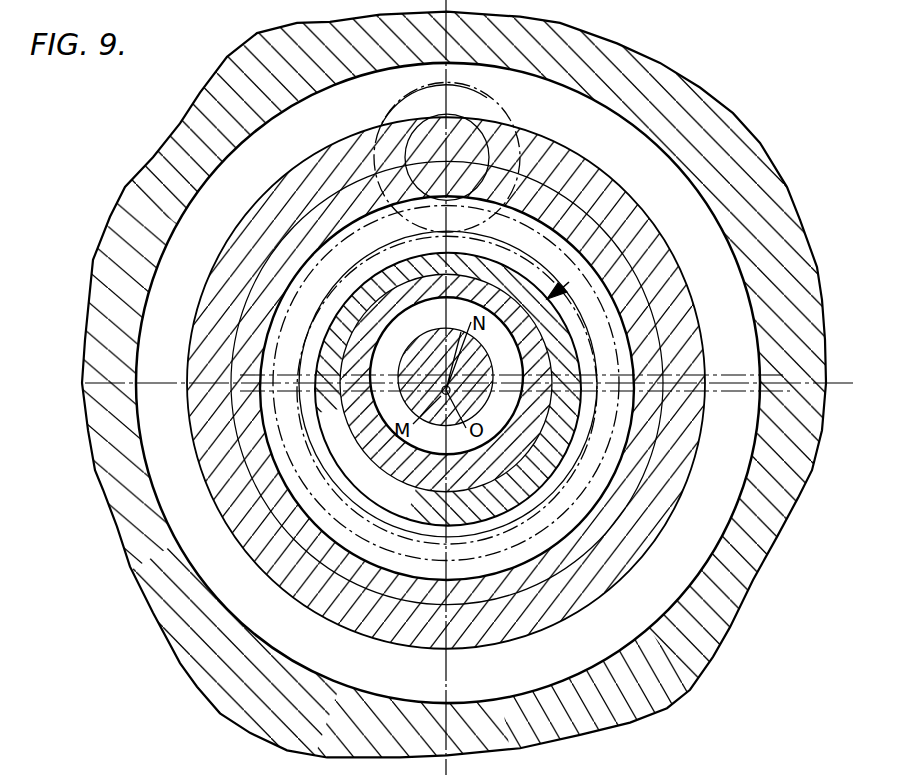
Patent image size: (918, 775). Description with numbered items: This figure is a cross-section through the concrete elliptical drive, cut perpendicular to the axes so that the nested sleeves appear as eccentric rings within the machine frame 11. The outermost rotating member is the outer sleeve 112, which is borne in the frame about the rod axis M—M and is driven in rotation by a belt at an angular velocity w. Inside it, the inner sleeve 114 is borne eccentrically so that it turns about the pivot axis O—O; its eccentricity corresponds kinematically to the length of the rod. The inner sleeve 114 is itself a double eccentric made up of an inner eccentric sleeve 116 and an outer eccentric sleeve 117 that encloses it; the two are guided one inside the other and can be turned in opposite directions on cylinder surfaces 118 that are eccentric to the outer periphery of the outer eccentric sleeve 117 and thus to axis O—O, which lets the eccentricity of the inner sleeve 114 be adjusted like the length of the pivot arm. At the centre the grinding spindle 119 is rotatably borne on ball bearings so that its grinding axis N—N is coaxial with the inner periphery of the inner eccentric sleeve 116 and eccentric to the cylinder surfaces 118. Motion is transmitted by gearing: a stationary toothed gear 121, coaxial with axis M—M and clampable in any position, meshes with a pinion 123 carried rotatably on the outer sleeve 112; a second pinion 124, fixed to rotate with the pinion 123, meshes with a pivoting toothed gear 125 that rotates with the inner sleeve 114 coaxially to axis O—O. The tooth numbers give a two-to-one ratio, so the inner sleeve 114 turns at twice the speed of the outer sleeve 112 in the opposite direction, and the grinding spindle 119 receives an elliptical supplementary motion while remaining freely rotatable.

The housing 11 is at (655, 691).
The outer sleeve 112 is at (690, 302).
The inner sleeve 114 is at (612, 250).
The inner eccentric sleeve 116 is at (548, 353).
The outer eccentric sleeve 117 is at (593, 300).
The cylinder surfaces 118 is at (548, 432).
The grinding spindle 119 is at (432, 343).
The stationary toothed gear 121 is at (333, 247).
The pinion 123 is at (512, 127).
The pinion 124 is at (505, 95).
The pivoting toothed gear 125 is at (317, 313).